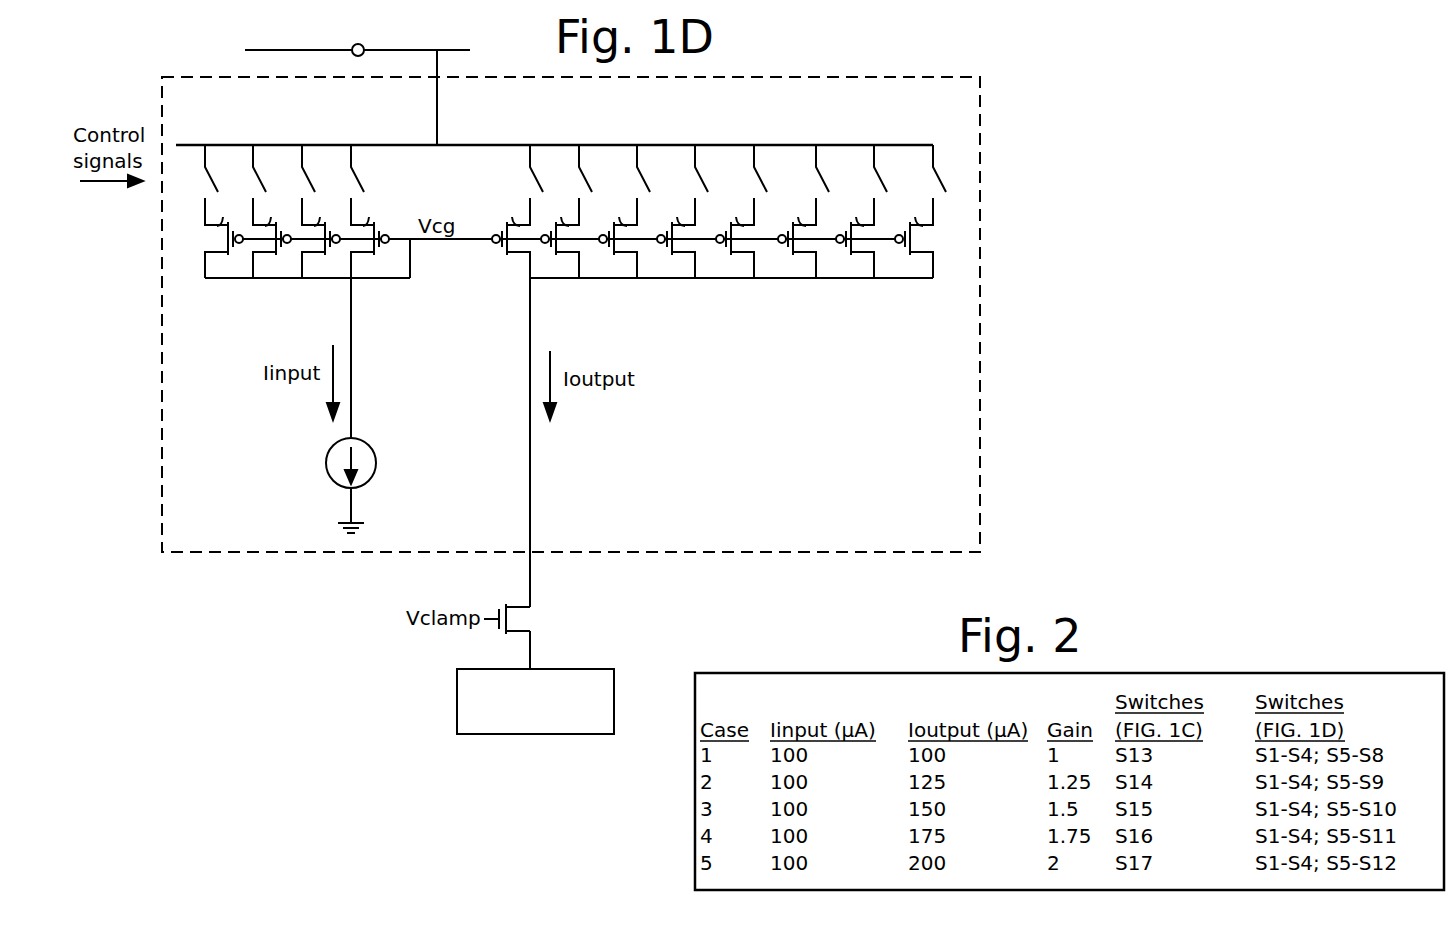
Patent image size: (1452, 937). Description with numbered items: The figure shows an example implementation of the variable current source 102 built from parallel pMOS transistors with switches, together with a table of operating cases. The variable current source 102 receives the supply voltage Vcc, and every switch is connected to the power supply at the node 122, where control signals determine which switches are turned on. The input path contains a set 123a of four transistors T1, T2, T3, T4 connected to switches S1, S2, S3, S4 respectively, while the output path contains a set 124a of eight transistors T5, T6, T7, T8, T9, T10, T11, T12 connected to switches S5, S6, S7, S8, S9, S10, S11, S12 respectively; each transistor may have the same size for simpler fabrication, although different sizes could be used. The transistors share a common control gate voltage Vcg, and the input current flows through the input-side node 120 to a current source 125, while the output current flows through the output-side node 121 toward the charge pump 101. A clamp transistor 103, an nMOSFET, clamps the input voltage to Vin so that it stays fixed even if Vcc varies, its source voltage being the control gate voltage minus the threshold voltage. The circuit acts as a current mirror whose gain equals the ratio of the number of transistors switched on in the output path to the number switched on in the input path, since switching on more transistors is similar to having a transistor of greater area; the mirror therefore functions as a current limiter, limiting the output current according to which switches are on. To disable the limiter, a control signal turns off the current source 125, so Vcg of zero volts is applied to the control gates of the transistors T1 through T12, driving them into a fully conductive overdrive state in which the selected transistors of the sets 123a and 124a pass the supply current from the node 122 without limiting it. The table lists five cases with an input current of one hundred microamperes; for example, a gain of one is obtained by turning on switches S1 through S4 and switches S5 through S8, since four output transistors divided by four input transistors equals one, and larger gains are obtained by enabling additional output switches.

The charge pump 101 is at (535, 701).
The variable current source 102 is at (152, 358).
The clamp transistor 103 is at (520, 634).
The input current node 120 is at (364, 418).
The output current node 121 is at (555, 651).
The node 122 is at (364, 47).
The set of transistors 123a is at (294, 241).
The set of transistors 124a is at (712, 241).
The current source 125 is at (370, 478).
The switch S1 is at (198, 170).
The switch S2 is at (245, 170).
The switch S3 is at (295, 170).
The switch S4 is at (343, 170).
The switch S5 is at (522, 170).
The switch S6 is at (571, 170).
The switch S7 is at (630, 170).
The switch S8 is at (688, 170).
The switch S9 is at (747, 170).
The switch S10 is at (803, 170).
The switch S11 is at (861, 170).
The switch S12 is at (919, 170).
The transistor T1 is at (226, 236).
The transistor T2 is at (274, 236).
The transistor T3 is at (323, 236).
The transistor T4 is at (372, 236).
The transistor T5 is at (504, 236).
The transistor T6 is at (557, 236).
The transistor T7 is at (618, 236).
The transistor T8 is at (676, 236).
The transistor T9 is at (735, 236).
The transistor T10 is at (795, 236).
The transistor T11 is at (853, 236).
The transistor T12 is at (912, 236).